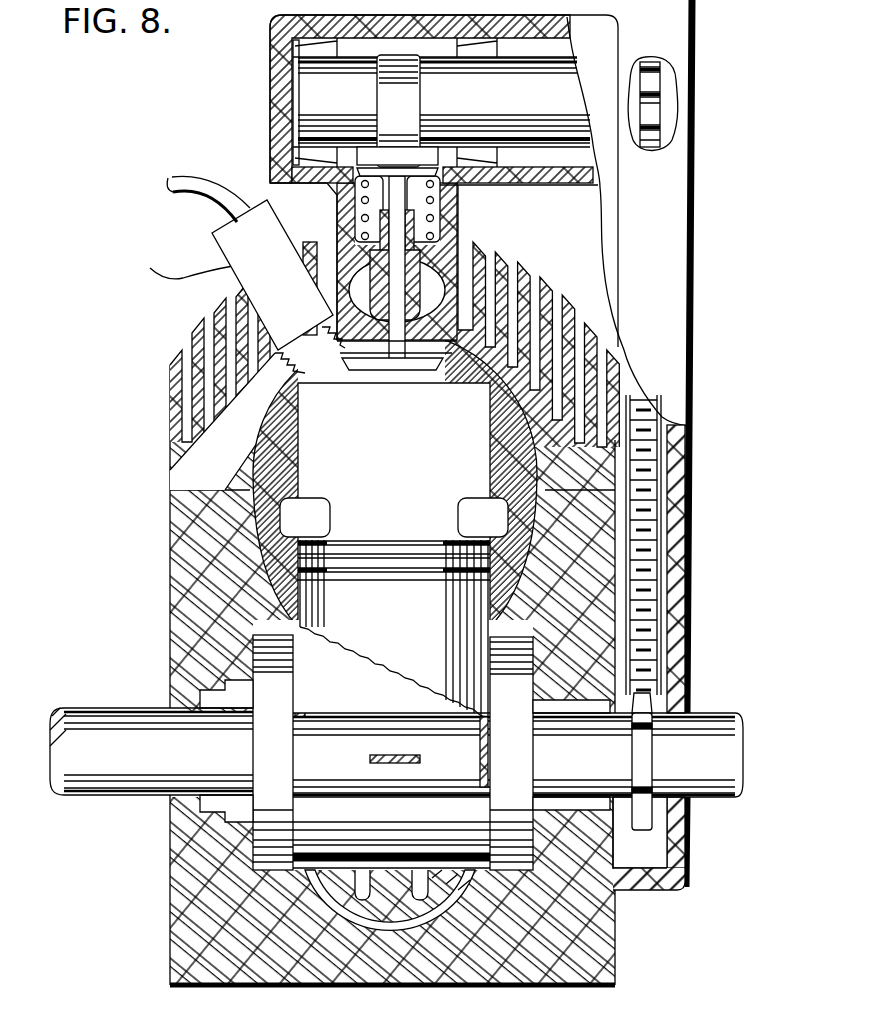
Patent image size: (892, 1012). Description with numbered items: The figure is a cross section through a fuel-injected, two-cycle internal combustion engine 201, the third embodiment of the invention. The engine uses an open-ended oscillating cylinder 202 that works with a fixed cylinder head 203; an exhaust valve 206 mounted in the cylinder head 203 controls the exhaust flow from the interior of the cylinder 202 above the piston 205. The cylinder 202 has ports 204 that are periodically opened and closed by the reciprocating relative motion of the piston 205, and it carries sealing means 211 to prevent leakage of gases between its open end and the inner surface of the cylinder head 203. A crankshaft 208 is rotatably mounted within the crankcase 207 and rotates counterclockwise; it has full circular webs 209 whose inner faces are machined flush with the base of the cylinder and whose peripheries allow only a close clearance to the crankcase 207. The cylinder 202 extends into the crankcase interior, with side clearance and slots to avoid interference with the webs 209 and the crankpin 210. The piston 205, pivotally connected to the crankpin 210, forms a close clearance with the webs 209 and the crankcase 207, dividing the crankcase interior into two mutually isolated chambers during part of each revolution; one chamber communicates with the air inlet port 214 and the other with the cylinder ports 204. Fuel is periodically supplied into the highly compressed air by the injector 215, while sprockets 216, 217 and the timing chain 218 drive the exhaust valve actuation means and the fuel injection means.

The engine 201 is at (722, 248).
The oscillating cylinder 202 is at (552, 458).
The cylinder head 203 is at (462, 414).
The ports 204 is at (495, 540).
The piston 205 is at (430, 622).
The exhaust valve 206 is at (447, 384).
The crankcase 207 is at (617, 968).
The crankshaft 208 is at (705, 712).
The webs 209 is at (245, 808).
The crankpin 210 is at (305, 897).
The sealing means 211 is at (262, 438).
The air inlet port 214 is at (285, 519).
The injector 215 is at (226, 272).
The sprocket 216 is at (655, 818).
The sprocket 217 is at (652, 112).
The timing chain 218 is at (648, 616).